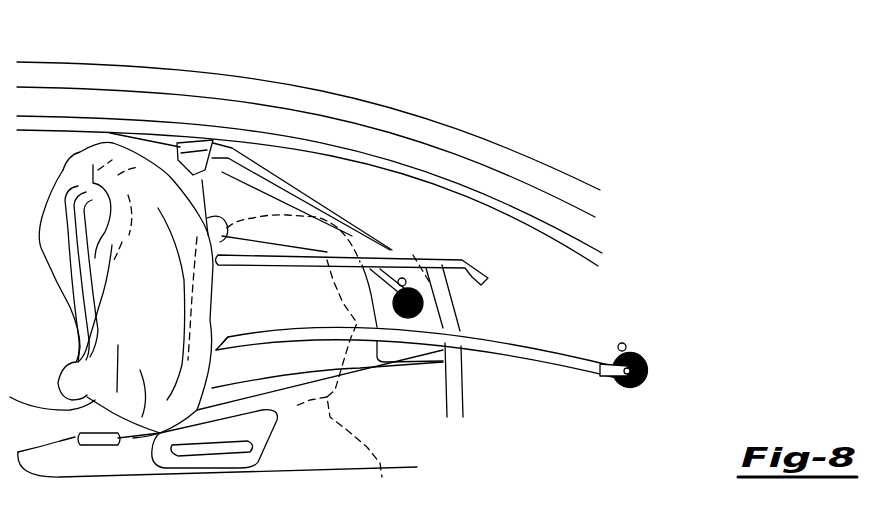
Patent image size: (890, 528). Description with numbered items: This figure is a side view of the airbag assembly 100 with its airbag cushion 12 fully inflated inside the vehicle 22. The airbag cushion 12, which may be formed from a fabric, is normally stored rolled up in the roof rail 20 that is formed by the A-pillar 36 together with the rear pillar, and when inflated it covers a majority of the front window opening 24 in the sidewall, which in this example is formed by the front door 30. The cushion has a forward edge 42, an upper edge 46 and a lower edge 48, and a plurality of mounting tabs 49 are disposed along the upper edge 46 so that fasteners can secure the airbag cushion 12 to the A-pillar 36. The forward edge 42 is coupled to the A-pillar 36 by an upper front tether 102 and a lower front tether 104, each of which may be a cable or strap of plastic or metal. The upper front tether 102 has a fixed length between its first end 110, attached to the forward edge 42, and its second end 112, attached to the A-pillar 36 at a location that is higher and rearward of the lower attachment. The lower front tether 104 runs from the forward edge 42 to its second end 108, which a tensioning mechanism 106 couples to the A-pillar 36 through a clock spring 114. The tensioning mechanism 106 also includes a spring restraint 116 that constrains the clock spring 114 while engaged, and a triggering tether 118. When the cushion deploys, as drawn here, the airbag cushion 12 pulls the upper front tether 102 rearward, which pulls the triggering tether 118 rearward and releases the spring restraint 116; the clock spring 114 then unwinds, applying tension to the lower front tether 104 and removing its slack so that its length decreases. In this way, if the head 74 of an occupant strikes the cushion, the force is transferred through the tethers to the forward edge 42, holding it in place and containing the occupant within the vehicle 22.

The airbag cushion 12 is at (63, 153).
The roof rail 20 is at (126, 98).
The vehicle 22 is at (560, 130).
The front window opening 24 is at (227, 199).
The front door 30 is at (390, 423).
The A-pillar 36 is at (500, 242).
The forward edge 42 is at (225, 232).
The upper edge 46 is at (111, 138).
The lower edge 48 is at (60, 445).
The mounting tabs 49 is at (211, 146).
The head 74 is at (342, 388).
The airbag assembly 100 is at (655, 352).
The upper front tether 102 is at (387, 256).
The lower front tether 104 is at (530, 357).
The tensioning mechanism 106 is at (641, 392).
The second end 108 is at (607, 370).
The first end 110 is at (220, 266).
The second end 112 is at (482, 276).
The clock spring 114 is at (649, 376).
The spring restraint 116 is at (427, 323).
The triggering tether 118 is at (392, 300).